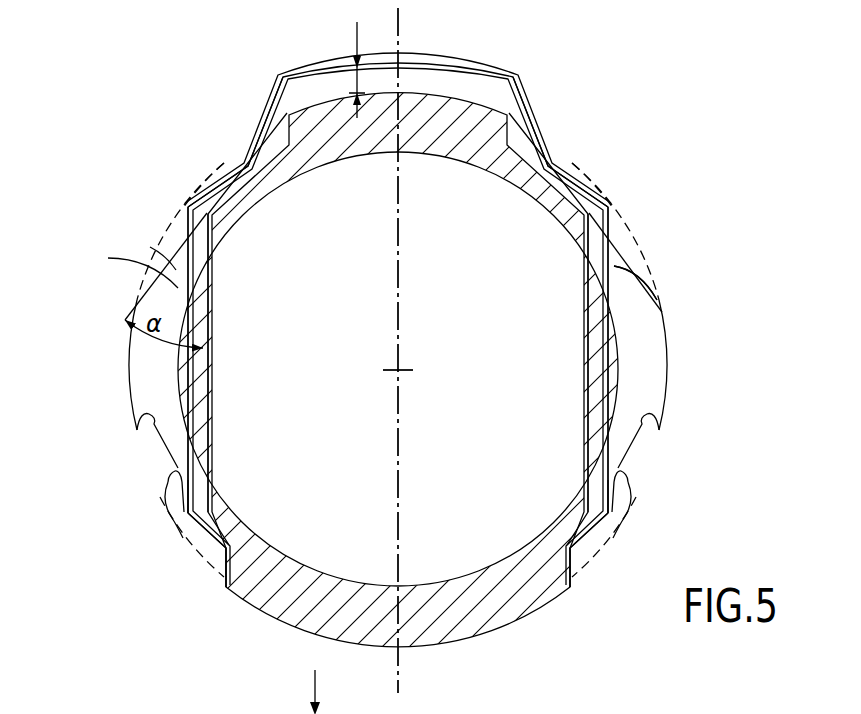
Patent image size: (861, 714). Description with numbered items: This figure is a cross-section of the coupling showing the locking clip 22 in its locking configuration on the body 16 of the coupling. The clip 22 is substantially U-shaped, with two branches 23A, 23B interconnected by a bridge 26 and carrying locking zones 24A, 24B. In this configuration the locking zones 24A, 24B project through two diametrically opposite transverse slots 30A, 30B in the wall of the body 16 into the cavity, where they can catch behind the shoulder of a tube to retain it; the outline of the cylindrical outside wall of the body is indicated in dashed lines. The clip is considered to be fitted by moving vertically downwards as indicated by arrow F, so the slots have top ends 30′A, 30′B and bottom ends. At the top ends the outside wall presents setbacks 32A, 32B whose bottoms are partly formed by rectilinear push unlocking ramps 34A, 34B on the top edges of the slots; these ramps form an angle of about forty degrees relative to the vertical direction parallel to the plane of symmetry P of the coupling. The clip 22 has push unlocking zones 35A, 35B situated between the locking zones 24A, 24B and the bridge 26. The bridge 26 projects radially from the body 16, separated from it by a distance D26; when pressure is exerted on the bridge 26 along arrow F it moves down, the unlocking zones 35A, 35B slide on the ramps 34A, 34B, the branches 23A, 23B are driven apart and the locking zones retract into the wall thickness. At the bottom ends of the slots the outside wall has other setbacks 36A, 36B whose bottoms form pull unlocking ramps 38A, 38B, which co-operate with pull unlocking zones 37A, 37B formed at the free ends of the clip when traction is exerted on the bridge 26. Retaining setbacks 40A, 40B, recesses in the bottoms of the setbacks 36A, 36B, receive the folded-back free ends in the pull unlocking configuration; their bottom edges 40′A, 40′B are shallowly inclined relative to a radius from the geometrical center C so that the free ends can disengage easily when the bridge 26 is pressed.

The body 16 is at (498, 612).
The locking clip 22 is at (532, 101).
The bridge 26 is at (497, 58).
The distance D26 is at (357, 38).
The setback 32A is at (234, 166).
The setback 32B is at (568, 170).
The locking zone 24A is at (214, 328).
The locking zone 24B is at (582, 376).
The slot 30A is at (150, 367).
The slot 30B is at (658, 362).
The push unlocking zone 35A is at (178, 204).
The push unlocking zone 35B is at (614, 208).
The top end of slot 30′A is at (152, 250).
The top end of slot 30′B is at (615, 267).
The branch 23A is at (172, 259).
The branch 23B is at (614, 298).
The push unlocking ramp 34A is at (148, 273).
The push unlocking ramp 34B is at (638, 270).
The plane of symmetry P is at (400, 262).
The geometrical center C is at (406, 373).
The retaining setback 40A is at (160, 456).
The retaining setback 40B is at (636, 459).
The bottom edge of recess 40′A is at (166, 512).
The bottom edge of recess 40′B is at (640, 502).
The pull unlocking ramp 38A is at (193, 518).
The pull unlocking ramp 38B is at (620, 522).
The pull unlocking zone 37A is at (219, 560).
The pull unlocking zone 37B is at (580, 586).
The setback 36A is at (213, 576).
The setback 36B is at (594, 553).
The arrow F is at (324, 692).